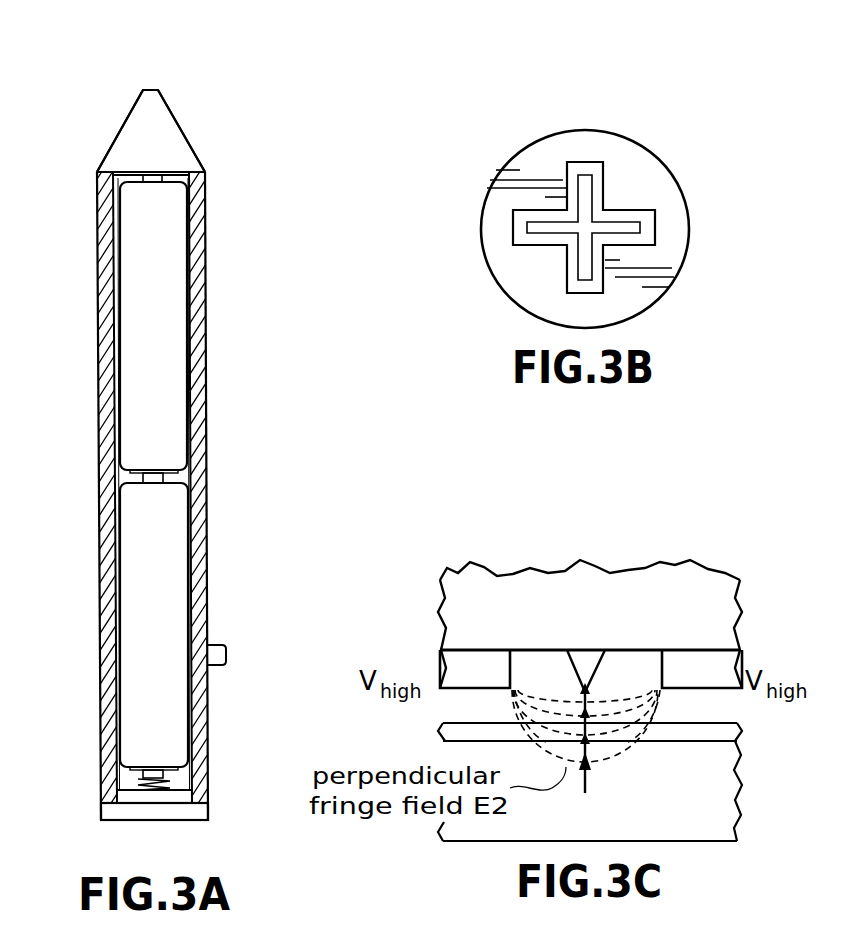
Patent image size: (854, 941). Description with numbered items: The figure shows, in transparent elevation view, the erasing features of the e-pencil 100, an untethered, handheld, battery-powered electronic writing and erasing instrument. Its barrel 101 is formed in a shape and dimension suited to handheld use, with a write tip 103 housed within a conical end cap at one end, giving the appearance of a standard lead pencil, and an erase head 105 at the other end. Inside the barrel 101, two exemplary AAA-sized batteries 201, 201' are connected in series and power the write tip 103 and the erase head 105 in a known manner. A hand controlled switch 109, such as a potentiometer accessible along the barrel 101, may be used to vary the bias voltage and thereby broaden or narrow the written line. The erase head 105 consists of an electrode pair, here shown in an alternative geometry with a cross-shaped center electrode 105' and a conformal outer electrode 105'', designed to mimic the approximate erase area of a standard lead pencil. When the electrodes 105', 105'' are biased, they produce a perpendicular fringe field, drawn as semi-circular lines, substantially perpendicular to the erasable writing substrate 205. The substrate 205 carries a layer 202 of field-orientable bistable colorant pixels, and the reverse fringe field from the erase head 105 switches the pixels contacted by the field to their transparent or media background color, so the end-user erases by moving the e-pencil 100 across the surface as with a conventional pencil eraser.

In FIG. 3A, the e-pencil 100 is at (224, 95).
In FIG. 3A, the write tip 103 is at (167, 104).
In FIG. 3A, the barrel 101 is at (205, 417).
In FIG. 3A, the battery 201' is at (107, 329).
In FIG. 3A, the battery 201 is at (109, 630).
In FIG. 3A, the hand controlled switch 109 is at (228, 653).
In FIG. 3A, the erase head 105 is at (126, 818).
In FIG. 3B, the erase head 105 is at (590, 209).
In FIG. 3C, the erase head 105 is at (590, 602).
In FIG. 3B, the outer electrode 105'' is at (584, 190).
In FIG. 3C, the outer electrode 105'' is at (591, 642).
In FIG. 3B, the center electrode 105' is at (520, 227).
In FIG. 3C, the center electrode 105' is at (586, 694).
In FIG. 3C, the colorant layer 202 is at (740, 731).
In FIG. 3C, the erasable writing substrate 205 is at (742, 782).